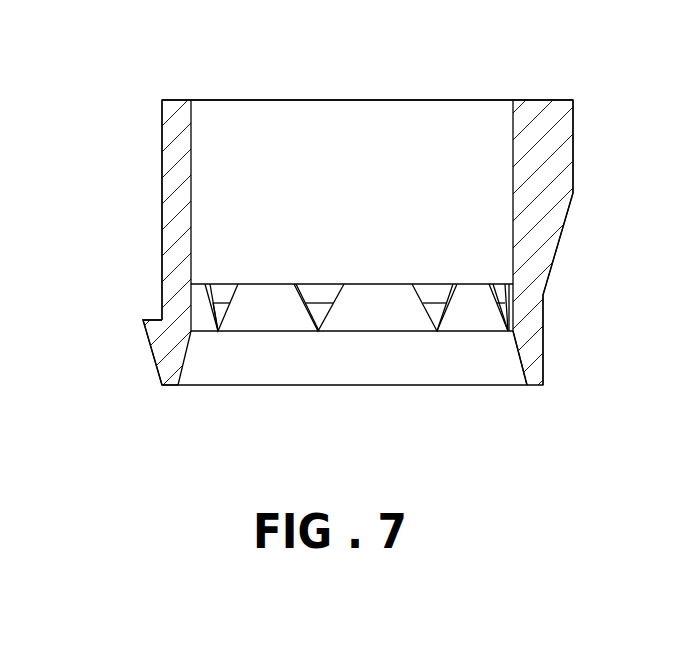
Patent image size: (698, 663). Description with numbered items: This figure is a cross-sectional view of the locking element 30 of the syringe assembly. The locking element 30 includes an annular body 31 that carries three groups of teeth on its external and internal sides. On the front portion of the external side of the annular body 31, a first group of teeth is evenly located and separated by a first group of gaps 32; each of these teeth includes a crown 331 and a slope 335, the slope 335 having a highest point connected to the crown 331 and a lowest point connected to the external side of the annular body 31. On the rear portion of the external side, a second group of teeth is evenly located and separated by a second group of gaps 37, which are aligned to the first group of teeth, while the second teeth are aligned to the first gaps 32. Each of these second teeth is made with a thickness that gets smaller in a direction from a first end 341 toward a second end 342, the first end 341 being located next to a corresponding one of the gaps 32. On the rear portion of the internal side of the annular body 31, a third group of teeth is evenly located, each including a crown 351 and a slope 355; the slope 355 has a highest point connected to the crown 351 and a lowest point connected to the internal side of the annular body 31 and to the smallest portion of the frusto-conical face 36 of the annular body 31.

The locking element 30 is at (295, 86).
The annular body 31 is at (407, 100).
The first group of gaps 32 is at (160, 202).
The crown 331 is at (573, 142).
The slope 335 is at (562, 233).
The first end 341 is at (155, 317).
The second end 342 is at (162, 386).
The crown 351 is at (228, 296).
The slope 355 is at (221, 317).
The frusto-conical face 36 is at (517, 340).
The second group of gaps 37 is at (543, 340).